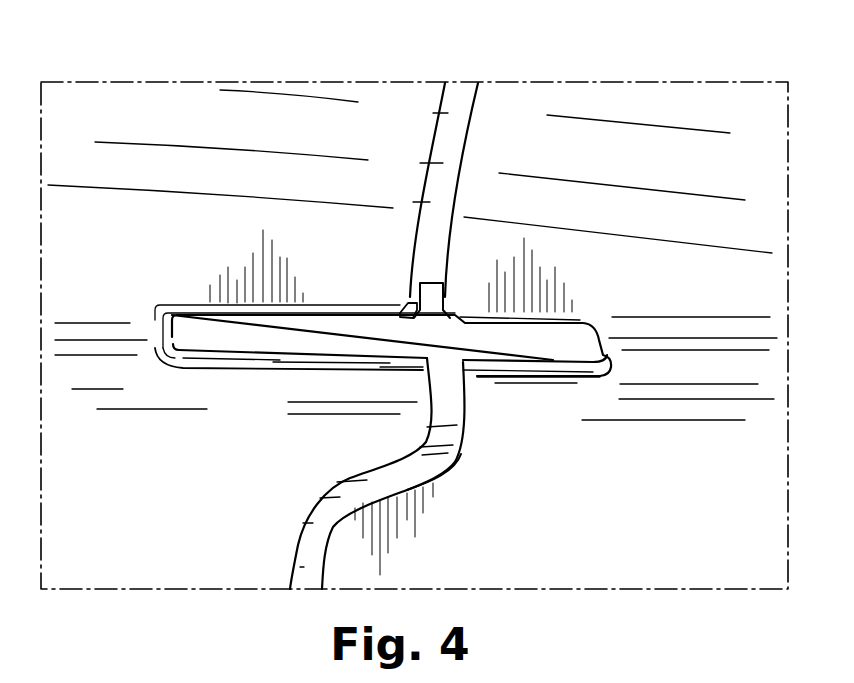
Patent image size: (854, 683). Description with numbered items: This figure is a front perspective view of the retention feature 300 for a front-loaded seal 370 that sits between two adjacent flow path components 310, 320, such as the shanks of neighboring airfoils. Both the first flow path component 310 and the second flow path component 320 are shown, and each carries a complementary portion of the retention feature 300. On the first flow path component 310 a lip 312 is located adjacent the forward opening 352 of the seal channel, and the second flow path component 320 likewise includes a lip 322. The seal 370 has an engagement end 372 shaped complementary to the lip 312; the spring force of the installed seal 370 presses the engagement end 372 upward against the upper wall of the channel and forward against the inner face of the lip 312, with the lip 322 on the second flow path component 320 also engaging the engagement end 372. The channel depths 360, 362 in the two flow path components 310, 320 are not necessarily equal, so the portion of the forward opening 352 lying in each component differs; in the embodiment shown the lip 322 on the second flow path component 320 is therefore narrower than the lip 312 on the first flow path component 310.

The retention feature 300 is at (286, 81).
The flow path component 310 is at (167, 137).
The lip 312 is at (267, 302).
The second flow path component 320 is at (665, 118).
The lip 322 is at (540, 315).
The forward opening 352 is at (330, 340).
The channel depth 360 is at (428, 360).
The channel depth 362 is at (467, 378).
The seal 370 is at (437, 287).
The engagement end 372 is at (413, 300).